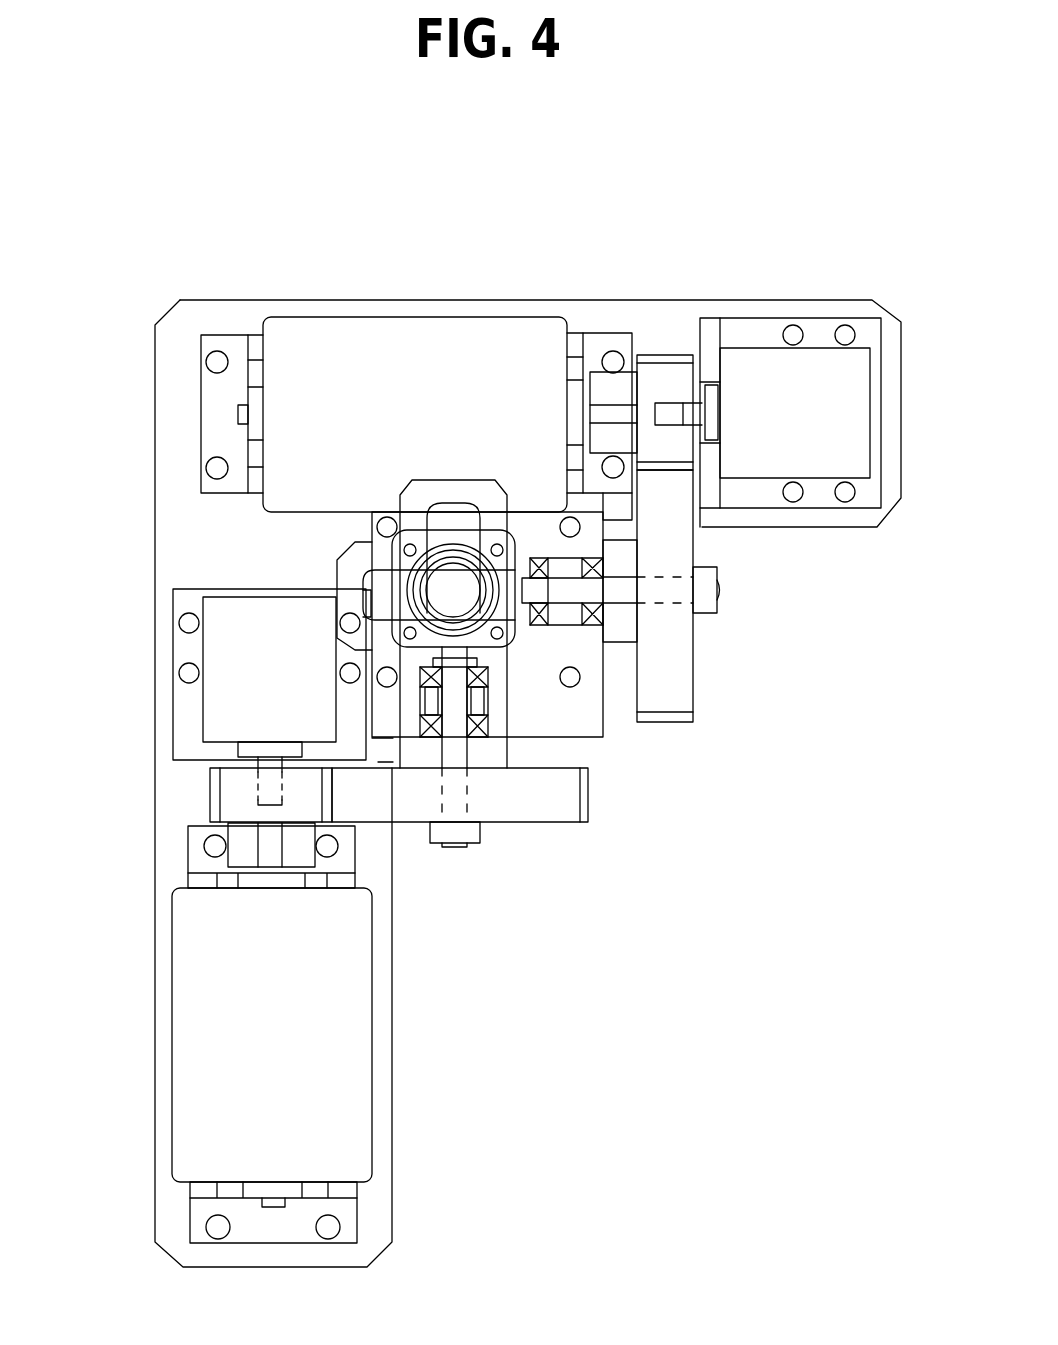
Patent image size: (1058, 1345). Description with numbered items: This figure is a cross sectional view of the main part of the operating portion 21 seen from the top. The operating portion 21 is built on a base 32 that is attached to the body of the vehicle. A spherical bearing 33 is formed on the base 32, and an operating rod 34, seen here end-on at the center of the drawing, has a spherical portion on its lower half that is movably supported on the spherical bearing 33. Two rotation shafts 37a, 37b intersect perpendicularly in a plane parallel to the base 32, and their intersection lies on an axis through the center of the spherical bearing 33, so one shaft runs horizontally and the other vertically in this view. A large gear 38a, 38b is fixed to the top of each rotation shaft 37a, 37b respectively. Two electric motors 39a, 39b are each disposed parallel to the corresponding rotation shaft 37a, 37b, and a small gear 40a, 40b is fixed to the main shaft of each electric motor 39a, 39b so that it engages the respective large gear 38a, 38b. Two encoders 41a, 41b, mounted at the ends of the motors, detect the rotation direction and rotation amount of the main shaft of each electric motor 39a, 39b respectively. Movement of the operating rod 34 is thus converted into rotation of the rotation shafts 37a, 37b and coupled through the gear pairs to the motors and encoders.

The operating portion 21 is at (798, 165).
The base 32 is at (183, 521).
The spherical bearing 33 is at (572, 720).
The operating rod 34 is at (453, 585).
The rotation shaft 37a is at (617, 607).
The rotation shaft 37b is at (453, 753).
The large gear 38a is at (680, 635).
The large gear 38b is at (560, 810).
The electric motor 39a is at (365, 330).
The electric motor 39b is at (192, 1033).
The small gear 40a is at (663, 357).
The small gear 40b is at (214, 795).
The encoder 41a is at (813, 367).
The encoder 41b is at (228, 653).